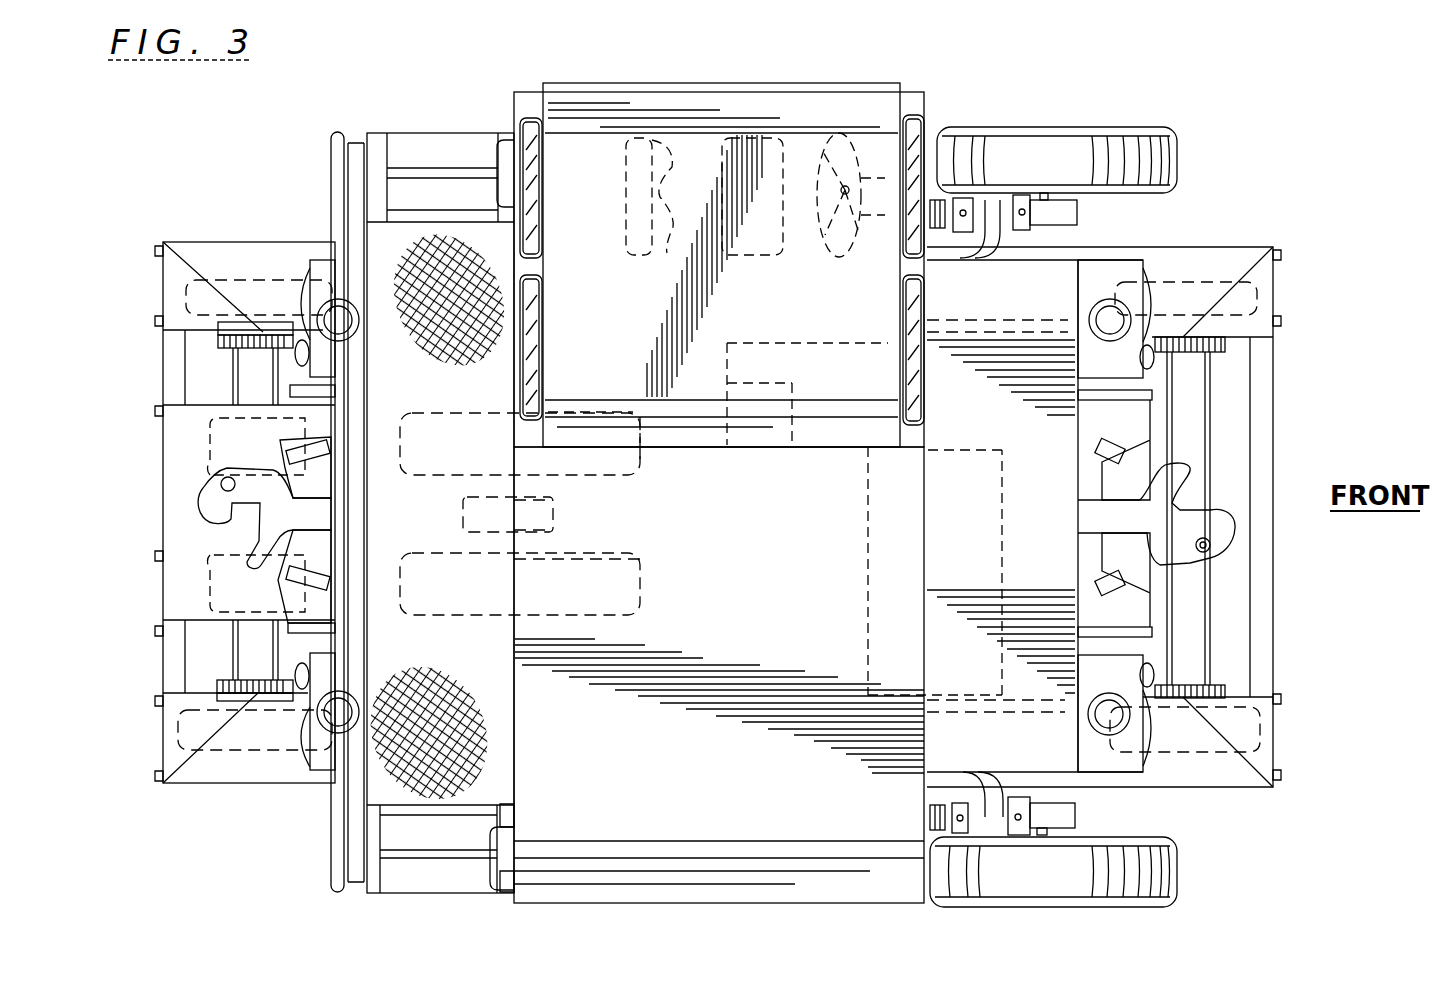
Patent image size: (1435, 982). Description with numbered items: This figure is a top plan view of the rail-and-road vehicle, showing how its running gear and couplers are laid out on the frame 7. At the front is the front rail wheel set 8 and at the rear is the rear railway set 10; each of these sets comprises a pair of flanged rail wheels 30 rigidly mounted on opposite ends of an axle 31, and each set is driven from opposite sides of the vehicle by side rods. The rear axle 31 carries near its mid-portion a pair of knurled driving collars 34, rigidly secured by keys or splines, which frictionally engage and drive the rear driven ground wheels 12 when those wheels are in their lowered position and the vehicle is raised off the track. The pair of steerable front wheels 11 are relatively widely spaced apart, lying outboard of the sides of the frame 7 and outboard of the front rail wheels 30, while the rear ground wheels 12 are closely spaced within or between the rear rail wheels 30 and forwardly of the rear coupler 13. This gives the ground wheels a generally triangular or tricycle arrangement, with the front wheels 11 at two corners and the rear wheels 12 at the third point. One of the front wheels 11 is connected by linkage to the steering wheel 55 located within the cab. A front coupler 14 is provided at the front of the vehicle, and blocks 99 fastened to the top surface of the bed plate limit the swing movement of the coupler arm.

The frame 7 is at (1181, 243).
The front rail wheel set 8 is at (1216, 407).
The rear railway set 10 is at (229, 393).
The steerable front wheels 11 is at (1185, 162).
The rear driven ground wheels 12 is at (618, 544).
The rear coupler 13 is at (240, 501).
The front coupler 14 is at (1153, 557).
The flanged rail wheels 30 is at (222, 282).
The axle 31 is at (233, 662).
The knurled driving collars 34 is at (207, 473).
The steering wheel 55 is at (840, 131).
The blocks 99 is at (300, 442).